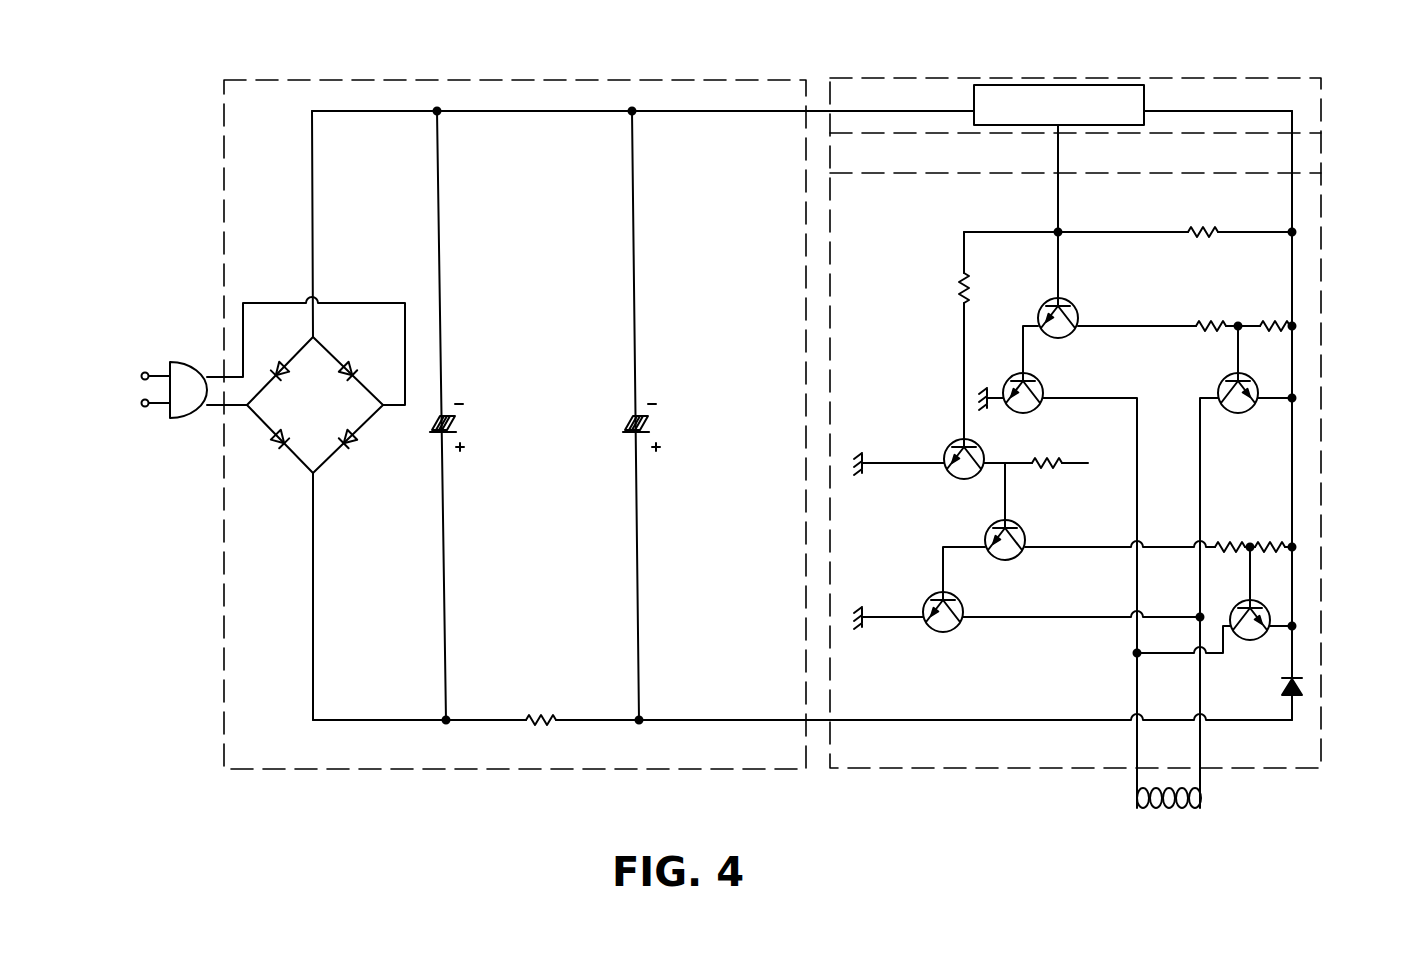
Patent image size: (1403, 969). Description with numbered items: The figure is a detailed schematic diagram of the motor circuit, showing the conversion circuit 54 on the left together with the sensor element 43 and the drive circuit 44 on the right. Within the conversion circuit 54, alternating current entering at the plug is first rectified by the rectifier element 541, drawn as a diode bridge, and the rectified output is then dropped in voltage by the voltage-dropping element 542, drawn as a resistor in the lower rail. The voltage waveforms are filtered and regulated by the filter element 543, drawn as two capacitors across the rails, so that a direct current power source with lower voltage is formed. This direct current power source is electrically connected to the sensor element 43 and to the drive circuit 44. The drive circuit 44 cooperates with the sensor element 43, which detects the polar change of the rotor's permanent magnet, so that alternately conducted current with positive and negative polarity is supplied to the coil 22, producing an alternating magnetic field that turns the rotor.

The conversion circuit 54 is at (457, 122).
The rectifier element 541 is at (180, 373).
The voltage-dropping element 542 is at (541, 727).
The filter element 543 is at (468, 425).
The sensor element 43 is at (1140, 85).
The drive circuit 44 is at (1272, 292).
The coil 22 is at (1195, 808).